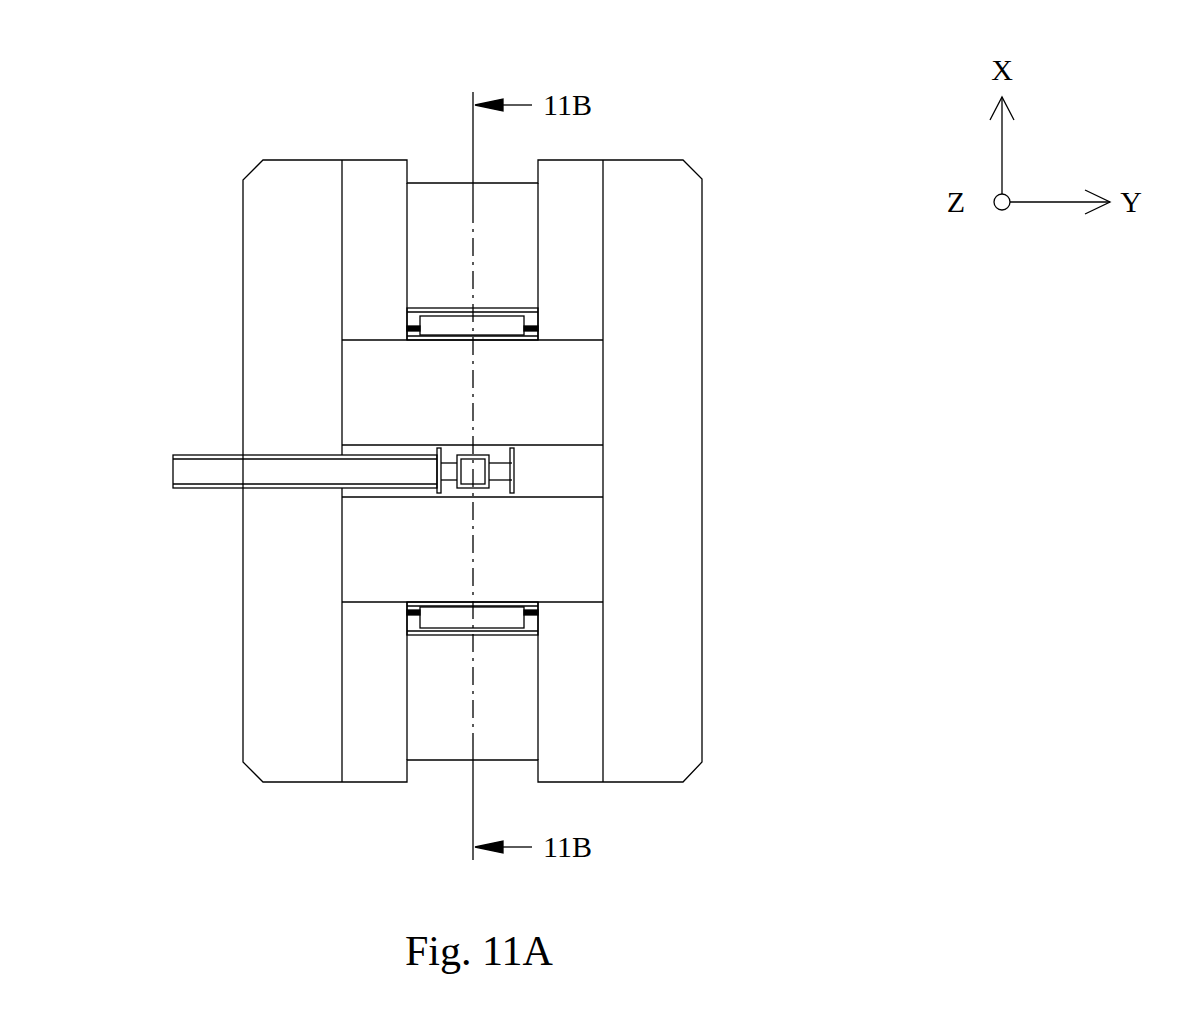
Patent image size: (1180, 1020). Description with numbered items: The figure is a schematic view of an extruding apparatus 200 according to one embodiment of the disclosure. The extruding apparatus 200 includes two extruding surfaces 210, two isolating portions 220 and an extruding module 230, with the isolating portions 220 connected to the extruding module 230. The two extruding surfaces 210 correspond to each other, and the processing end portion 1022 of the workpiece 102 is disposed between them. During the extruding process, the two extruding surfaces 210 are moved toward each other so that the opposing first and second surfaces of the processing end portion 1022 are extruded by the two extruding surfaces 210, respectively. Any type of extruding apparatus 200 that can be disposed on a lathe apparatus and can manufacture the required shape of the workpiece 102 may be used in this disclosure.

The workpiece 102 is at (490, 452).
The processing end portion 1022 is at (500, 465).
The extruding apparatus 200 is at (823, 90).
The extruding surfaces 210 is at (482, 455).
The isolating portions 220 is at (450, 453).
The extruding module 230 is at (640, 170).